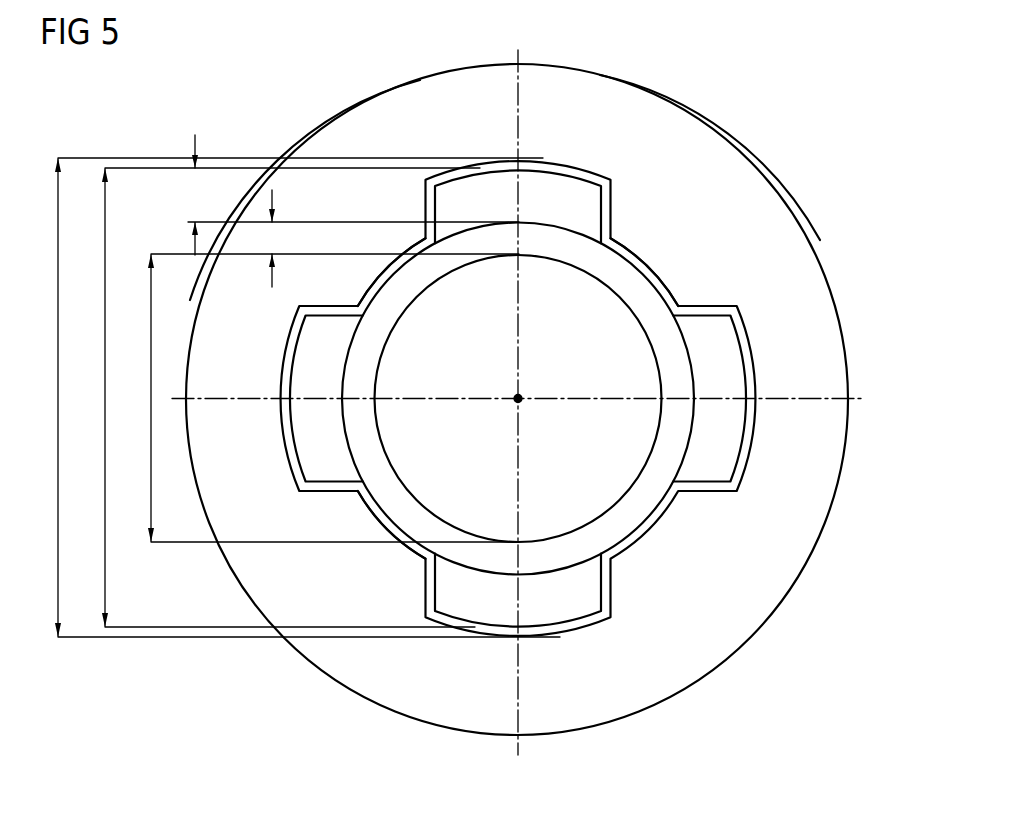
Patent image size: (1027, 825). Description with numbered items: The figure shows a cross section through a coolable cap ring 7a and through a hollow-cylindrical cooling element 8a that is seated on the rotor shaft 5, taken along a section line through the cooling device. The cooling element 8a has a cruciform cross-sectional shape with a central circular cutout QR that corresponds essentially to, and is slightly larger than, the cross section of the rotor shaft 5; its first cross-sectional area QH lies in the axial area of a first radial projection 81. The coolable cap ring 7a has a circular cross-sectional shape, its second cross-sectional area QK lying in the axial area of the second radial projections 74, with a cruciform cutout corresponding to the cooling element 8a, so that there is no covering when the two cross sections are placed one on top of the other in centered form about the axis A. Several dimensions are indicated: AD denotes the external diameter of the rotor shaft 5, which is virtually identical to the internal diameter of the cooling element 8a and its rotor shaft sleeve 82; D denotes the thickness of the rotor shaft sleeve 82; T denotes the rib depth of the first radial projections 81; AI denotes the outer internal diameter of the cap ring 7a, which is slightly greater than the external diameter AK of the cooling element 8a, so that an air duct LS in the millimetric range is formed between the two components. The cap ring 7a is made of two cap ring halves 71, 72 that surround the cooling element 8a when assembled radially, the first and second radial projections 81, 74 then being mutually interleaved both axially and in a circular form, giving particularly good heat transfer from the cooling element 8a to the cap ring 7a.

The rotor shaft 5 is at (582, 293).
The coolable cap ring 7a is at (775, 185).
The cap ring half 71 is at (360, 102).
The cap ring half 72 is at (675, 105).
The second radial projections 74 is at (635, 225).
The hollow-cylindrical cooling element 8a is at (667, 505).
The first radial projections 81 is at (535, 178).
The rotor shaft sleeve 82 is at (620, 523).
The axis A is at (520, 397).
The air duct LS is at (570, 165).
The second cross-sectional area QK is at (800, 275).
The first cross-sectional area QH is at (673, 362).
The central circular cutout QR is at (638, 435).
The outer internal diameter AI is at (296, 397).
The external diameter AK is at (276, 397).
The external diameter AD is at (316, 398).
The rib depth T is at (353, 195).
The thickness D is at (272, 238).